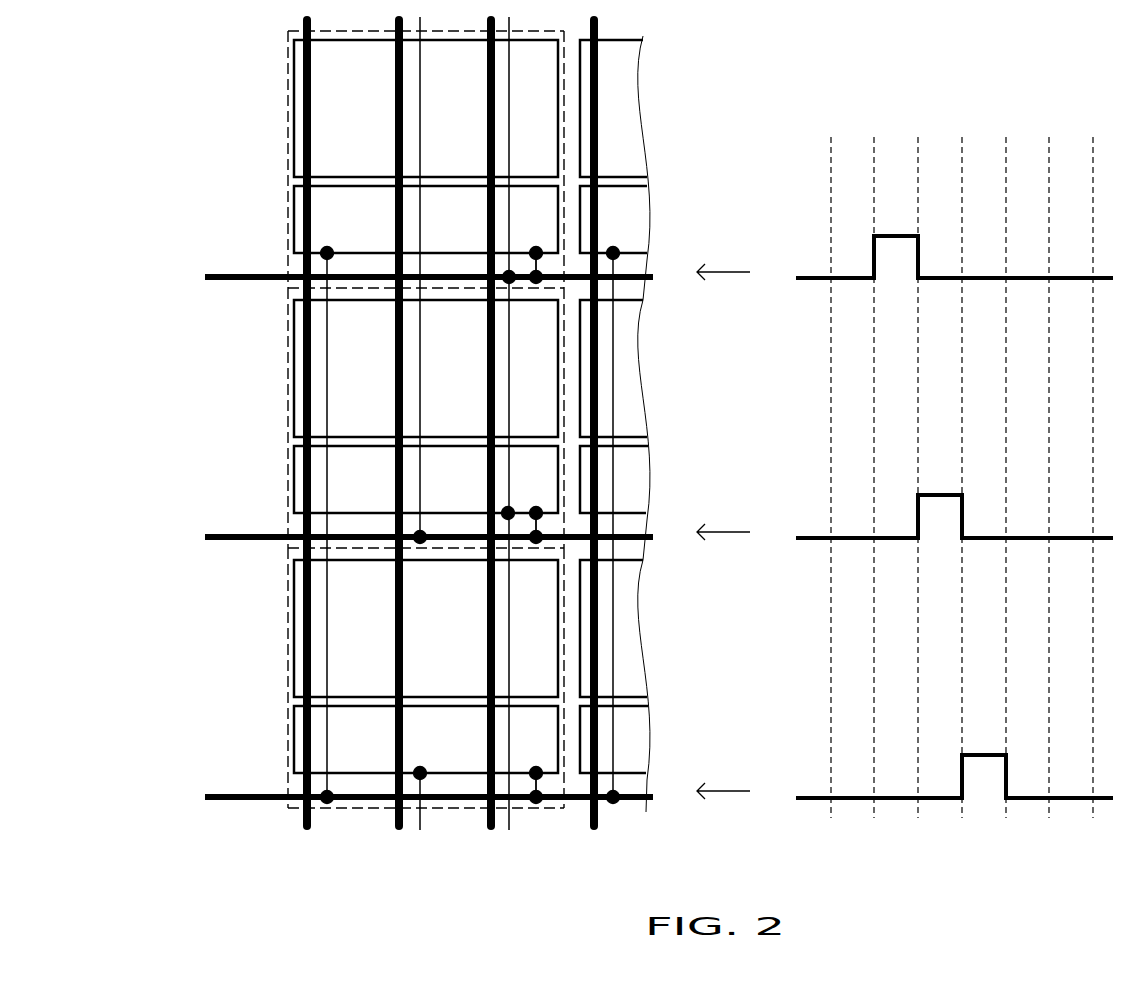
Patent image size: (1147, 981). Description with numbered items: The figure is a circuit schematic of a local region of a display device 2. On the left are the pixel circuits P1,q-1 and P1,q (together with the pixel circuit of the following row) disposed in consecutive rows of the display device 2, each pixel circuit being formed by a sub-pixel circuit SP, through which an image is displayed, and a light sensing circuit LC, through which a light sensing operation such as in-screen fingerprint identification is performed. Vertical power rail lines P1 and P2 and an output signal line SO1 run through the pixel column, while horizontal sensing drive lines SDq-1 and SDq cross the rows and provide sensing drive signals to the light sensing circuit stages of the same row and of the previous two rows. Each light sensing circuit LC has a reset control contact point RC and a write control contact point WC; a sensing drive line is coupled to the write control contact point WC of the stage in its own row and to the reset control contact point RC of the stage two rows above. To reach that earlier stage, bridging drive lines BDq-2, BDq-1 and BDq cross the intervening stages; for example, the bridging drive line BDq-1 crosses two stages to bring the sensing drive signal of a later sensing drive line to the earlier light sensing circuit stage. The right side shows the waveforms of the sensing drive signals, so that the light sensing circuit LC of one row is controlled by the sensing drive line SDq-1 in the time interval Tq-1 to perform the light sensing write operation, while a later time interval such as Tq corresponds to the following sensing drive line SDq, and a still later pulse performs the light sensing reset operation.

The display device 2 is at (137, 48).
The sub-pixel circuit SP is at (294, 96).
The light sensing circuit LC is at (294, 209).
The reset control contact point RC is at (506, 509).
The write control contact point WC is at (536, 511).
The power rail line P1 is at (450, 444).
The power rail line P2 is at (491, 444).
The output signal line SO1 is at (400, 444).
The bridging drive line BDq-2 is at (419, 78).
The bridging drive line BDq-1 is at (326, 362).
The bridging drive line BDq is at (509, 620).
The pixel circuit P1,q-1 is at (288, 146).
The pixel circuit P1,q is at (288, 404).
The sensing drive line SDq-1 is at (620, 263).
The sensing drive line SDq is at (635, 524).
The time interval Tq-1 is at (874, 510).
The time interval Tq is at (940, 506).